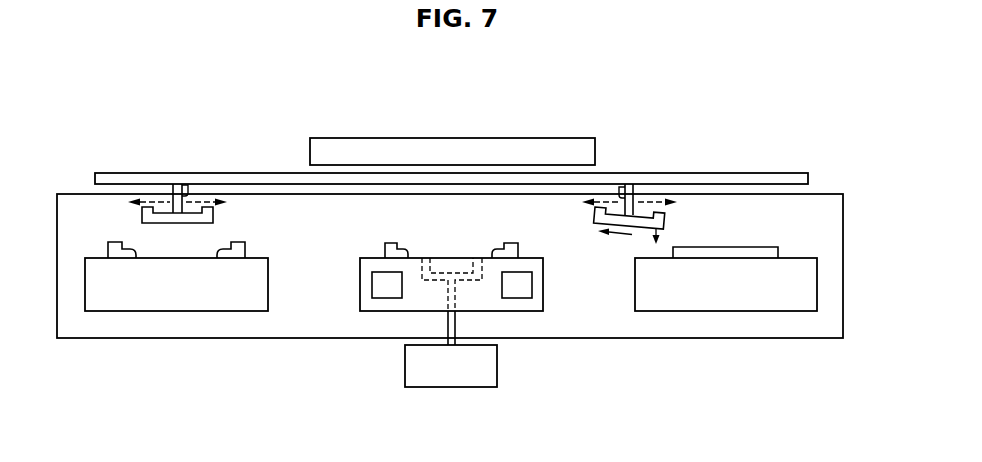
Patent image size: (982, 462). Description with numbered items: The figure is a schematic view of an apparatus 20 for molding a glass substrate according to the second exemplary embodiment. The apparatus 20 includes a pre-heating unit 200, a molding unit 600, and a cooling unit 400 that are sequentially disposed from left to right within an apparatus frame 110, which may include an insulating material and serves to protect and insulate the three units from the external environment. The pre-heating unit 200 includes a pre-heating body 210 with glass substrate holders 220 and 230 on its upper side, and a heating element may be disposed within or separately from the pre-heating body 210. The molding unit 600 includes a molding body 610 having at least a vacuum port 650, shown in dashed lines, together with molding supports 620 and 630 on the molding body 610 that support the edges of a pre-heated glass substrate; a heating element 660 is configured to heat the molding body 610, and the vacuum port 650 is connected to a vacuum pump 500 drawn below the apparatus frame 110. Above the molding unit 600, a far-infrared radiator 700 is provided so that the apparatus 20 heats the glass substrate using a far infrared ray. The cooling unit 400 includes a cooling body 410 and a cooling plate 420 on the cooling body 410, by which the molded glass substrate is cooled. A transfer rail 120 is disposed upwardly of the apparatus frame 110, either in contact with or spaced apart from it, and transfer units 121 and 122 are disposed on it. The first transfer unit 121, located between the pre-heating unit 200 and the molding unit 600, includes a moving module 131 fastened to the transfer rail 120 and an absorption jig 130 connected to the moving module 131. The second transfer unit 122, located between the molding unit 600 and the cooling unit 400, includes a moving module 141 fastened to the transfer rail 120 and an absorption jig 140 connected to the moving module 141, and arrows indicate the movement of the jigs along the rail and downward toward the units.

The apparatus for molding a glass substrate 20 is at (70, 133).
The apparatus frame 110 is at (825, 194).
The transfer rail 120 is at (232, 179).
The first transfer unit 121 is at (177, 160).
The second transfer unit 122 is at (629, 171).
The absorption jig 130 is at (162, 218).
The moving module 131 is at (195, 169).
The absorption jig 140 is at (643, 218).
The moving module 141 is at (615, 171).
The pre-heating unit 200 is at (164, 311).
The pre-heating body 210 is at (178, 290).
The glass substrate holder 220 is at (120, 252).
The glass substrate holder 230 is at (232, 253).
The cooling unit 400 is at (722, 314).
The cooling body 410 is at (730, 290).
The cooling plate 420 is at (755, 255).
The vacuum pump 500 is at (452, 367).
The molding unit 600 is at (440, 275).
The molding body 610 is at (510, 306).
The molding support 620 is at (385, 244).
The molding support 630 is at (517, 244).
The vacuum port 650 is at (448, 295).
The heating element 660 is at (377, 288).
The far-infrared radiator 700 is at (452, 151).